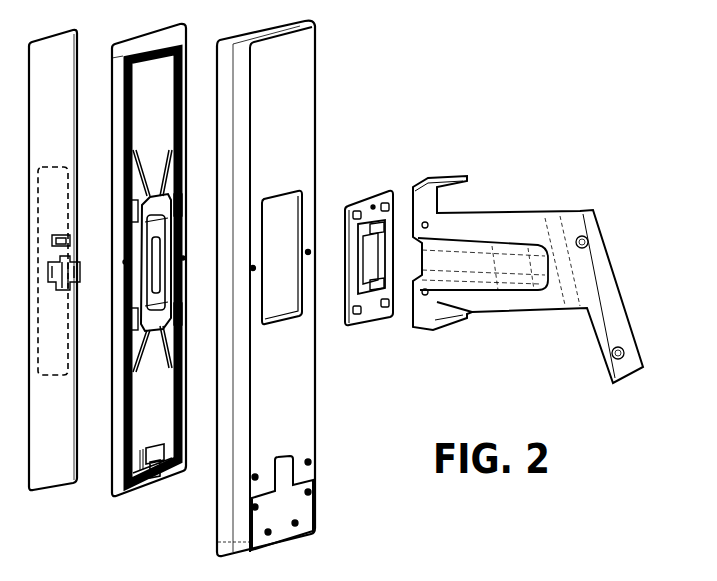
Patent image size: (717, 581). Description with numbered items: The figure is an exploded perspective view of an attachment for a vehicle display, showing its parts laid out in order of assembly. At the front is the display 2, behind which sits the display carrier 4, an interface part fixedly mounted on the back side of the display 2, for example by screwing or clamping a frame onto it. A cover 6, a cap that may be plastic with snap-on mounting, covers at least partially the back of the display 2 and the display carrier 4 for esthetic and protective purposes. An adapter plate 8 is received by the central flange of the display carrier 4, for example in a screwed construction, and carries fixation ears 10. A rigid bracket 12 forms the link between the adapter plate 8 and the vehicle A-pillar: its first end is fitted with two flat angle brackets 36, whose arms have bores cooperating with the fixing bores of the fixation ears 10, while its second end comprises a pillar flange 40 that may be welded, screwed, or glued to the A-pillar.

The display 2 is at (52, 472).
The display carrier 4 is at (153, 467).
The cover 6 is at (290, 415).
The adapter plate 8 is at (371, 257).
The fixation ears 10 is at (372, 303).
The rigid bracket 12 is at (463, 283).
The flat angle brackets 36 is at (452, 176).
The pillar flange 40 is at (545, 247).